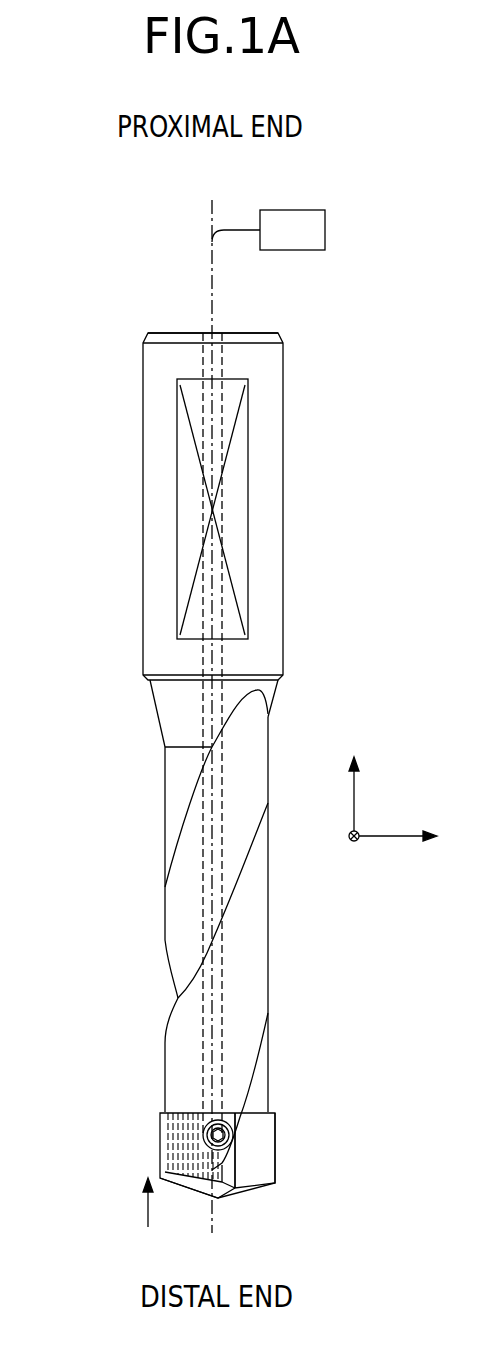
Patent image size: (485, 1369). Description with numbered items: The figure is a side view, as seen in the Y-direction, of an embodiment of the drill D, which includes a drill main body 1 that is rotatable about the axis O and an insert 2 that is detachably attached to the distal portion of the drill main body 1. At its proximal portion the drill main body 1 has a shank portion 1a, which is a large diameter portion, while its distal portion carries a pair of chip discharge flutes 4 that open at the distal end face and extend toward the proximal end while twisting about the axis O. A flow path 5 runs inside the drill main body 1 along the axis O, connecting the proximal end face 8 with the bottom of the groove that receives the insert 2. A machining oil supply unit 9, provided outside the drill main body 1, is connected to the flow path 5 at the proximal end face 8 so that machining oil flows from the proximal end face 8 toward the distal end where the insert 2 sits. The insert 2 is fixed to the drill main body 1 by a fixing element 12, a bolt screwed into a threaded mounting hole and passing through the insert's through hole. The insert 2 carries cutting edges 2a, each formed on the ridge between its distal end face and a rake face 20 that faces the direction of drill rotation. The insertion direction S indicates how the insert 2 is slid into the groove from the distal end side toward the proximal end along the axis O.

The drill D is at (99, 311).
The drill main body 1 is at (158, 802).
The shank portion 1a is at (158, 476).
The insert 2 is at (257, 1168).
The cutting edge 2a is at (245, 1192).
The chip discharge flute 4 is at (180, 943).
The flow path 5 is at (207, 713).
The proximal end face 8 is at (245, 331).
The machining oil supply unit 9 is at (292, 222).
The fixing element 12 is at (232, 1132).
The rake face 20 is at (257, 1147).
The axis O is at (213, 358).
The insertion direction S is at (135, 1204).